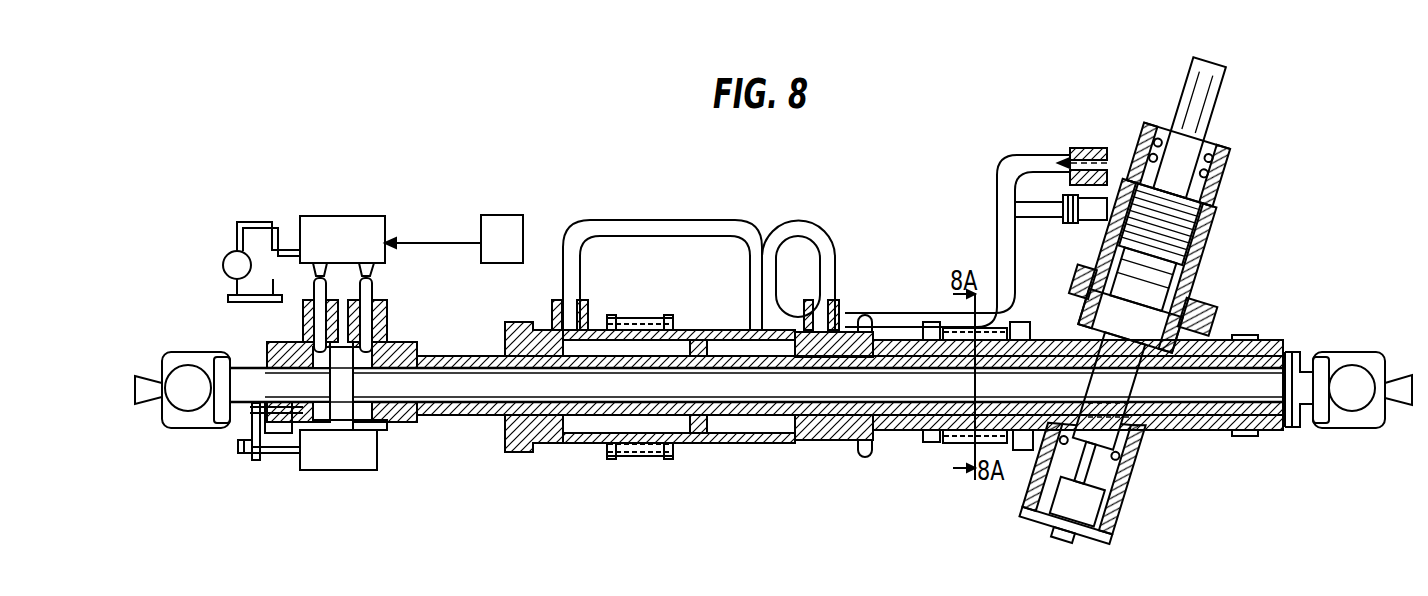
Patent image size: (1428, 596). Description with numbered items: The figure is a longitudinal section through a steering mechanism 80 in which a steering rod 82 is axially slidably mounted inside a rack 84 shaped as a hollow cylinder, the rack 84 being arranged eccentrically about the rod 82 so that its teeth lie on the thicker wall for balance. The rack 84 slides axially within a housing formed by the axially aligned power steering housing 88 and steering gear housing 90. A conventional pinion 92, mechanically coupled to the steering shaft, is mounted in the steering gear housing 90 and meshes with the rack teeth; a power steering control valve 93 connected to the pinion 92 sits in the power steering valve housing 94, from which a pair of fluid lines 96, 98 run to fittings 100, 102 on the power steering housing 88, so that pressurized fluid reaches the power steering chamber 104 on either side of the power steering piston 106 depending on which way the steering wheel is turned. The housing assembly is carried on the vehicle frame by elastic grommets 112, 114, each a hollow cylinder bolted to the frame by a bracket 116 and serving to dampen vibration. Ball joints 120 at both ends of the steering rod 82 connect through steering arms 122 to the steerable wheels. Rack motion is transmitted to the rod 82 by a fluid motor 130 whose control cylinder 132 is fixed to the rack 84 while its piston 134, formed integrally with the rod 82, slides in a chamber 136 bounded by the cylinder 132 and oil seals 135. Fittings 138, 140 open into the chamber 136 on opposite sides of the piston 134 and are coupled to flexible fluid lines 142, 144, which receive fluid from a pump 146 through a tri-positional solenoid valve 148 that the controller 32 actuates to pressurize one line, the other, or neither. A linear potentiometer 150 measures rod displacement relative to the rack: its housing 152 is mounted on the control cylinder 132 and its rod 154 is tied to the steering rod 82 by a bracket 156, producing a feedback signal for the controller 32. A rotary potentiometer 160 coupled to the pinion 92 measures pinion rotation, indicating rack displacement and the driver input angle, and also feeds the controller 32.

The controller 32 is at (490, 215).
The mechanism 80 is at (784, 456).
The steering rod 82 is at (430, 417).
The rack 84 is at (1223, 436).
The power steering housing 88 is at (580, 444).
The steering gear housing 90 is at (887, 446).
The pinion 92 is at (1143, 440).
The power steering control valve 93 is at (1230, 233).
The power steering valve housing 94 is at (1233, 194).
The fluid line 96 is at (1043, 165).
The fluid line 98 is at (1043, 209).
The fitting 100 is at (623, 296).
The fitting 102 is at (842, 318).
The power steering chamber 104 is at (644, 457).
The power steering piston 106 is at (708, 440).
The elastic grommet 112 is at (678, 330).
The elastic grommet 114 is at (935, 446).
The bracket 116 is at (641, 322).
The ball joint 120 is at (173, 428).
The steering arm 122 is at (152, 402).
The fluid motor 130 is at (257, 344).
The control cylinder 132 is at (328, 432).
The piston 134 is at (366, 431).
The oil seal 135 is at (366, 358).
The chamber 136 is at (396, 345).
The fitting 138 is at (302, 327).
The fitting 140 is at (385, 318).
The flexible fluid line 142 is at (316, 288).
The flexible fluid line 144 is at (374, 290).
The pump 146 is at (227, 258).
The valve 148 is at (346, 216).
The potentiometer 150 is at (368, 470).
The housing 152 is at (293, 463).
The rod 154 is at (278, 450).
The bracket 156 is at (247, 425).
The rotary potentiometer 160 is at (1118, 518).